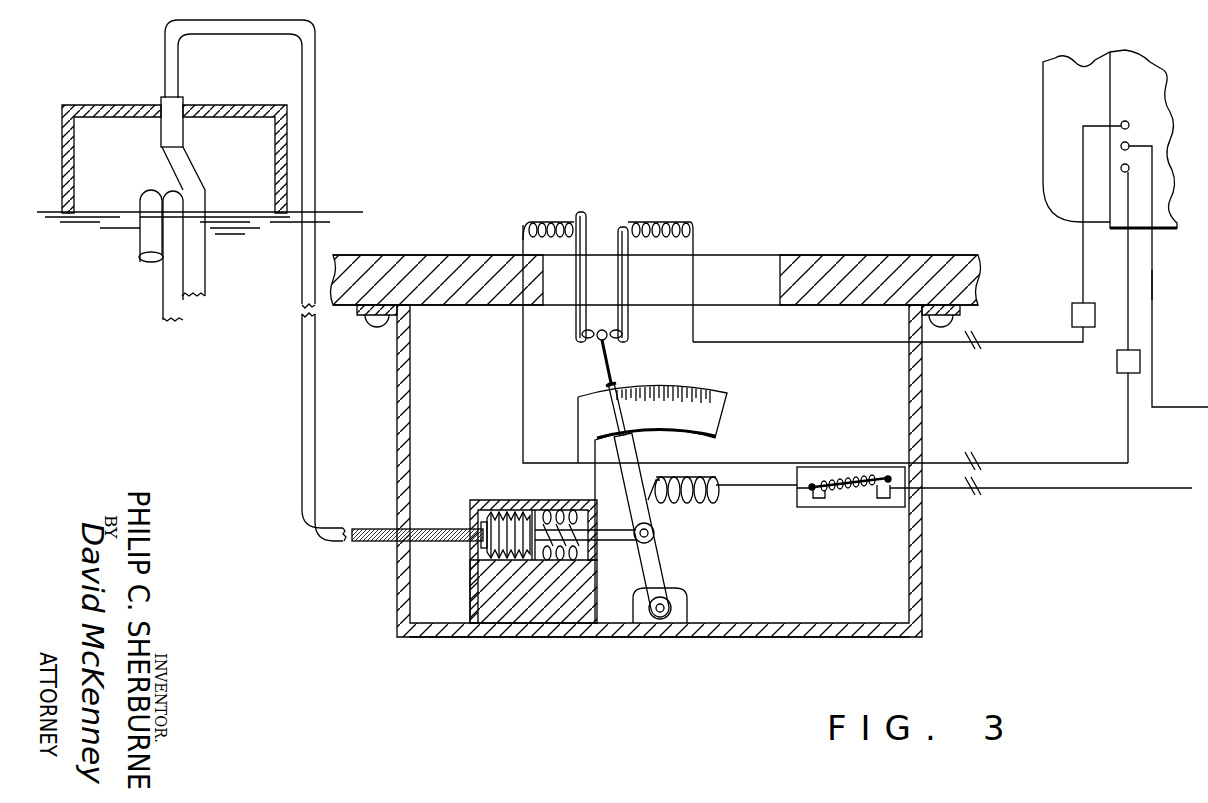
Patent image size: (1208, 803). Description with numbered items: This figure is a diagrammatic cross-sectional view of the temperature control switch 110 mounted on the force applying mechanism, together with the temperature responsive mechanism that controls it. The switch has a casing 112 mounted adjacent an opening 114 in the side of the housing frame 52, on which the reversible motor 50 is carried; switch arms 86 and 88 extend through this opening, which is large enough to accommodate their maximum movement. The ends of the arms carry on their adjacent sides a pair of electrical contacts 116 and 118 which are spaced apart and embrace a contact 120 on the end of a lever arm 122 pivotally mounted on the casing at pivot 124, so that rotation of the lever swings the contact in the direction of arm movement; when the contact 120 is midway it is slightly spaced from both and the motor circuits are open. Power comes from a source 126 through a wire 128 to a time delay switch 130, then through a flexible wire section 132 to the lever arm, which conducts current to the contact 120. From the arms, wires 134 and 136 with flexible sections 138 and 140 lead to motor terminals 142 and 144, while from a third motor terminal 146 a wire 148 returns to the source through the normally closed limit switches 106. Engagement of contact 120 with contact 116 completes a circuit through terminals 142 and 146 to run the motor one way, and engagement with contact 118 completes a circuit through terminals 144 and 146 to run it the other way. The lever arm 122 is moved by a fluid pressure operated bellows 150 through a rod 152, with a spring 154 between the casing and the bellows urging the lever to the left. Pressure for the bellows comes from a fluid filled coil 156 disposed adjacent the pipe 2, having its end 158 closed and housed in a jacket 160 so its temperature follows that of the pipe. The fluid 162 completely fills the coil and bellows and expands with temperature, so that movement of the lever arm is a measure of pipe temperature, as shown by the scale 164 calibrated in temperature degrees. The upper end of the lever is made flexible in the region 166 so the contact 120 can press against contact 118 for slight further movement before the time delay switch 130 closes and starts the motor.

The pipe 2 is at (330, 212).
The reversible motor 50 is at (1043, 160).
The housing frame 52 is at (887, 255).
The switch arm 86 is at (582, 212).
The switch arm 88 is at (626, 228).
The limit switches 106 is at (1072, 313).
The temperature control switch 110 is at (935, 580).
The casing 112 is at (400, 418).
The opening 114 is at (766, 258).
The electrical contact 116 is at (583, 340).
The electrical contact 118 is at (628, 335).
The contact 120 is at (600, 340).
The lever arm 122 is at (655, 556).
The pivot 124 is at (664, 608).
The source 126 is at (1168, 301).
The wire 128 is at (1040, 489).
The time delay switch 130 is at (843, 507).
The flexible wire section 132 is at (720, 500).
The wire 134 is at (522, 322).
The wire 136 is at (737, 342).
The flexible section 138 is at (528, 222).
The flexible section 140 is at (693, 222).
The motor terminal 142 is at (1123, 172).
The motor terminal 144 is at (1125, 121).
The third motor terminal 146 is at (1128, 146).
The wire 148 is at (1152, 282).
The bellows 150 is at (500, 510).
The rod 152 is at (625, 540).
The spring 154 is at (560, 553).
The fluid filled coil 156 is at (200, 288).
The closed end 158 is at (148, 262).
The jacket 160 is at (125, 107).
The fluid 162 is at (481, 551).
The scale 164 is at (717, 392).
The indicator needle 166 is at (612, 358).